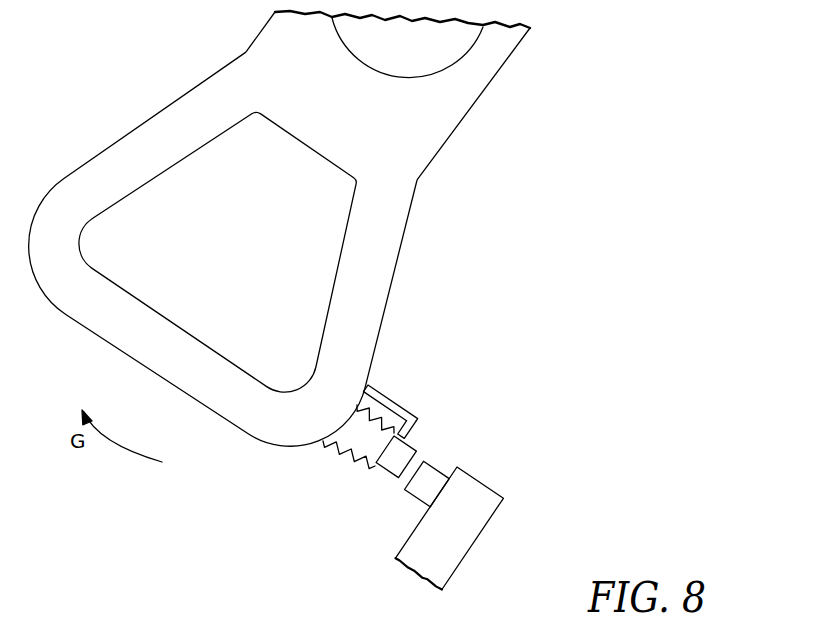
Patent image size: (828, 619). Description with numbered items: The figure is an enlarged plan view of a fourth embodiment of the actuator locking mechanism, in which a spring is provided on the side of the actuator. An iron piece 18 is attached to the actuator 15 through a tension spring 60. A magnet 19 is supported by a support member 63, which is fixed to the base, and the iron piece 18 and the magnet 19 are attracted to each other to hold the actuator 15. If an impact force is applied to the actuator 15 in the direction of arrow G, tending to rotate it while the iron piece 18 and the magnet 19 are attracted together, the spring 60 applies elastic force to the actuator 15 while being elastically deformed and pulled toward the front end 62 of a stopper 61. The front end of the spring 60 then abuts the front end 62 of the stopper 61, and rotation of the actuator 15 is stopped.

The actuator 15 is at (407, 227).
The iron piece 18 is at (384, 469).
The magnet 19 is at (415, 497).
The tension spring 60 is at (336, 456).
The stopper 61 is at (392, 401).
The front end 62 is at (412, 428).
The support member 63 is at (489, 520).